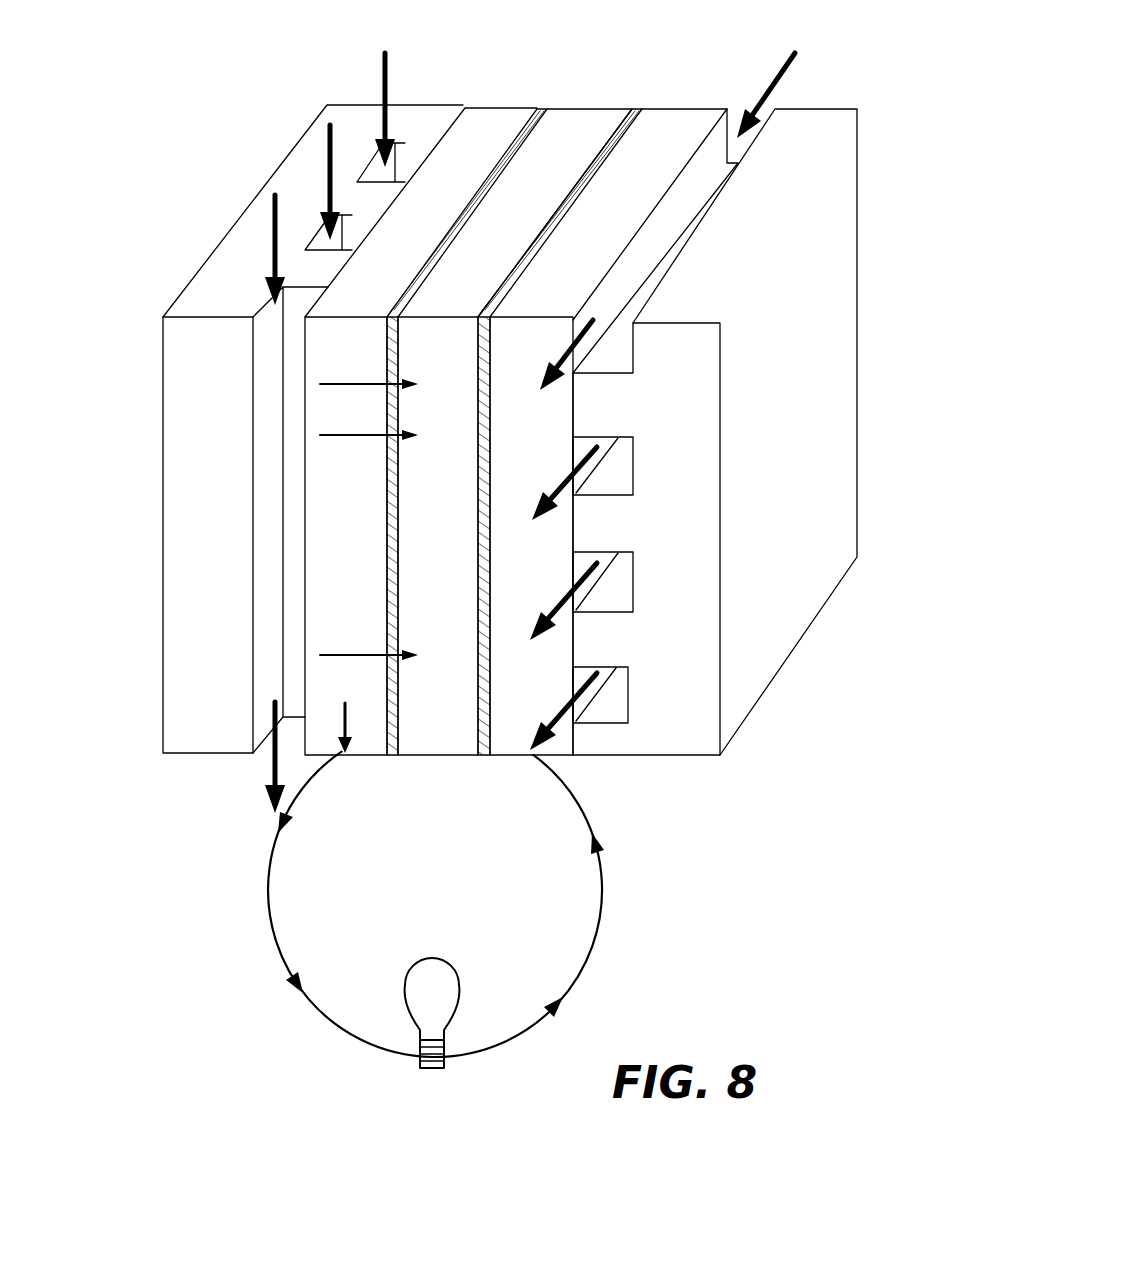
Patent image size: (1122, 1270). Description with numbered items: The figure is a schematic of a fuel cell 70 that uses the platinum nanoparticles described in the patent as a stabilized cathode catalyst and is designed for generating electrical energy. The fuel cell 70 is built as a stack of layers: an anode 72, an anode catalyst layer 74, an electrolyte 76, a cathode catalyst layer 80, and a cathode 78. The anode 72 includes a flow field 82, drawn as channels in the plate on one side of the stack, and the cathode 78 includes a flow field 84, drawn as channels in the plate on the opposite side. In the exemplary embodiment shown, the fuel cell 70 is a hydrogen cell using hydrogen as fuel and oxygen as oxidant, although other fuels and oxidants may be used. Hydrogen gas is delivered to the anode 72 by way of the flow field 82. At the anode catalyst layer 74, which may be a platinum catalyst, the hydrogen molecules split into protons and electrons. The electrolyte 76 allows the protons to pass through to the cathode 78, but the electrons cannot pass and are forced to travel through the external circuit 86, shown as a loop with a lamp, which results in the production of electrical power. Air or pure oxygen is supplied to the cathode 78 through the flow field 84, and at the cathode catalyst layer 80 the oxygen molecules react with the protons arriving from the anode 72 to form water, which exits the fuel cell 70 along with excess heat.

The fuel cell 70 is at (200, 111).
The anode 72 is at (421, 431).
The anode catalyst layer 74 is at (538, 113).
The electrolyte 76 is at (515, 432).
The cathode 78 is at (608, 432).
The cathode catalyst layer 80 is at (633, 113).
The flow field 82 is at (413, 155).
The flow field 84 is at (618, 357).
The external circuit 86 is at (270, 915).